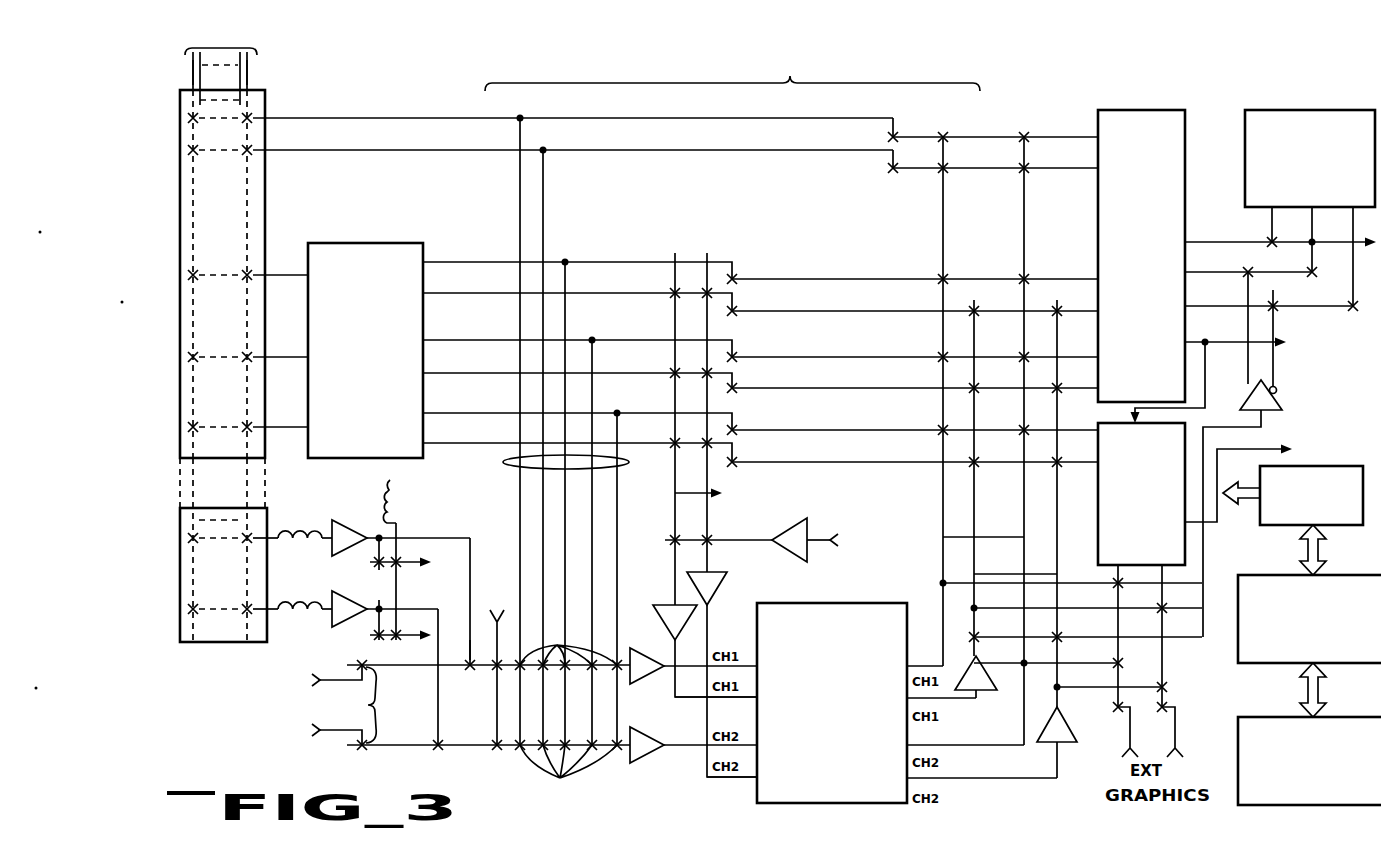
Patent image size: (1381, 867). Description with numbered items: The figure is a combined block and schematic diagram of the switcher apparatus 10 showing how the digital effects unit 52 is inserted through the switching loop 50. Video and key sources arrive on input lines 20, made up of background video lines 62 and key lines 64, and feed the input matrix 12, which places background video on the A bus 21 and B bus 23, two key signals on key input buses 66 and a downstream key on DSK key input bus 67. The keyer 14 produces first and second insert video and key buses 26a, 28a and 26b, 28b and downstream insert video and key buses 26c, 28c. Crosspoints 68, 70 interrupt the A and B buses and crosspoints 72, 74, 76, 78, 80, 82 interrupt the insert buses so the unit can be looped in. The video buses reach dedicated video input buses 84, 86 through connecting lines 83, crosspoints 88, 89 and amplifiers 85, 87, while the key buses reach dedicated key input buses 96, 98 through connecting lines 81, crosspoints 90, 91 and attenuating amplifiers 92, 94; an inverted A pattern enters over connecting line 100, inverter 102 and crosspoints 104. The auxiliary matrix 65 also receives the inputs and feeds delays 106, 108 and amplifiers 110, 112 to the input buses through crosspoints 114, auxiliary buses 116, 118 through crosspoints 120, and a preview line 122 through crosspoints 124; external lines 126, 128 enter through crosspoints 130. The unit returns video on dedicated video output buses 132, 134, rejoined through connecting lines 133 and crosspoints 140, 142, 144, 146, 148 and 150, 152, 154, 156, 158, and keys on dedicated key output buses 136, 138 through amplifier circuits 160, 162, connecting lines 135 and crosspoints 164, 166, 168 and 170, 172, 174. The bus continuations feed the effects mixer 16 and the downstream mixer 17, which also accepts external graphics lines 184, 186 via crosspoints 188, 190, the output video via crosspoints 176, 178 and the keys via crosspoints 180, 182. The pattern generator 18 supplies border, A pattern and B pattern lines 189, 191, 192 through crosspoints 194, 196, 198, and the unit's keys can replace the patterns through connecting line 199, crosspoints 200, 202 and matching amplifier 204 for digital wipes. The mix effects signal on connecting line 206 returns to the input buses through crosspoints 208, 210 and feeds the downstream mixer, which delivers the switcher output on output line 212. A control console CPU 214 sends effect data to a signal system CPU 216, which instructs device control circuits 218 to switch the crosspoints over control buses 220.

The video switching system 10 is at (1370, 230).
The input matrix 12 is at (270, 104).
The keyer 14 is at (372, 238).
The effects mixer 16 is at (1132, 106).
The downstream mixer 17 is at (1195, 555).
The pattern generator 18 is at (1303, 106).
The input lines 20 is at (361, 69).
The A bus 21 is at (636, 118).
The B bus 23 is at (636, 150).
The K1 insert video bus 26a is at (590, 262).
The K2 insert video bus 26b is at (608, 340).
The DSK insert video bus 26c is at (643, 413).
The K1 key bus 28a is at (585, 293).
The K2 key bus 28b is at (620, 369).
The DSK key bus 28c is at (637, 443).
The switching loop 50 is at (732, 74).
The digital effects unit 52 is at (800, 598).
The background video input lines 62 is at (190, 76).
The video key input lines 64 is at (253, 73).
The auxiliary matrix 65 is at (220, 652).
The key input buses 66 is at (290, 280).
The DSK key input bus 67 is at (283, 422).
The A bus crosspoint 68 is at (898, 133).
The B bus crosspoint 70 is at (888, 170).
The crosspoint 72 is at (738, 274).
The crosspoint 74 is at (738, 308).
The crosspoint 76 is at (738, 354).
The crosspoint 78 is at (738, 385).
The crosspoint 80 is at (738, 427).
The connecting lines 81 is at (713, 494).
The crosspoint 82 is at (738, 459).
The connecting lines 83 is at (503, 462).
The dedicated digital effects video input bus 84 is at (462, 660).
The amplifier 85 is at (645, 658).
The dedicated digital effects video input bus 86 is at (432, 750).
The amplifier 87 is at (648, 730).
The crosspoints 88 is at (568, 644).
The crosspoints 89 is at (568, 775).
The crosspoints 90 is at (675, 260).
The crosspoints 91 is at (708, 260).
The amplifier 92 is at (665, 604).
The amplifier 94 is at (715, 578).
The dedicated digital effects key input bus 96 is at (686, 698).
The dedicated digital effects key input bus 98 is at (718, 780).
The connecting line 100 is at (818, 536).
The inverter 102 is at (792, 527).
The crosspoints 104 is at (702, 536).
The delay 106 is at (304, 526).
The delay 108 is at (302, 612).
The amplifier 110 is at (346, 526).
The amplifier 112 is at (347, 630).
The crosspoints 114 is at (466, 670).
The auxiliary signal bus 116 is at (402, 552).
The auxiliary signal bus 118 is at (406, 632).
The crosspoints 120 is at (378, 602).
The preview line 122 is at (394, 486).
The crosspoints 124 is at (404, 566).
The external line 126 is at (343, 681).
The external line 128 is at (337, 735).
The crosspoints 130 is at (395, 705).
The dedicated digital effects video output bus 132 is at (921, 666).
The connecting lines 133 is at (983, 524).
The dedicated digital effects video output bus 134 is at (998, 746).
The connecting lines 135 is at (1015, 562).
The dedicated digital effects key output bus 136 is at (966, 699).
The dedicated digital effects key output bus 138 is at (1020, 779).
The crosspoint 140 is at (947, 132).
The crosspoint 142 is at (947, 163).
The crosspoint 144 is at (939, 276).
The crosspoint 146 is at (939, 356).
The crosspoint 148 is at (939, 432).
The crosspoint 150 is at (1028, 133).
The crosspoint 152 is at (1028, 163).
The crosspoint 154 is at (1020, 276).
The crosspoint 156 is at (1021, 354).
The crosspoint 158 is at (1020, 428).
The amplifier circuit 160 is at (980, 675).
The amplifier circuit 162 is at (1063, 743).
The crosspoint 164 is at (970, 310).
The crosspoint 166 is at (970, 387).
The crosspoint 168 is at (970, 463).
The crosspoint 170 is at (1060, 305).
The crosspoint 172 is at (1062, 390).
The crosspoint 174 is at (1053, 466).
The crosspoint 176 is at (1113, 581).
The crosspoint 178 is at (1114, 661).
The crosspoint 180 is at (1168, 612).
The crosspoint 182 is at (1166, 683).
The external graphics line 184 is at (1131, 728).
The external graphics line 186 is at (1176, 728).
The crosspoint 188 is at (1114, 708).
The border signal line 189 is at (1198, 240).
The crosspoint 190 is at (1168, 705).
The A pattern line 191 is at (1314, 240).
The B pattern line 192 is at (1356, 294).
The crosspoint 194 is at (1268, 240).
The crosspoint 196 is at (1308, 278).
The crosspoint 198 is at (1349, 309).
The connecting line 199 is at (1224, 426).
The crosspoints 200 is at (1055, 636).
The crosspoints 202 is at (1270, 303).
The matching amplifier 204 is at (1284, 396).
The M/E connecting line 206 is at (497, 670).
The crosspoint 208 is at (512, 670).
The crosspoint 210 is at (495, 748).
The output line 212 is at (1268, 449).
The control console CPU 214 is at (1341, 714).
The signal system CPU 216 is at (1270, 665).
The device control circuits 218 is at (1335, 527).
The control buses 220 is at (1250, 502).